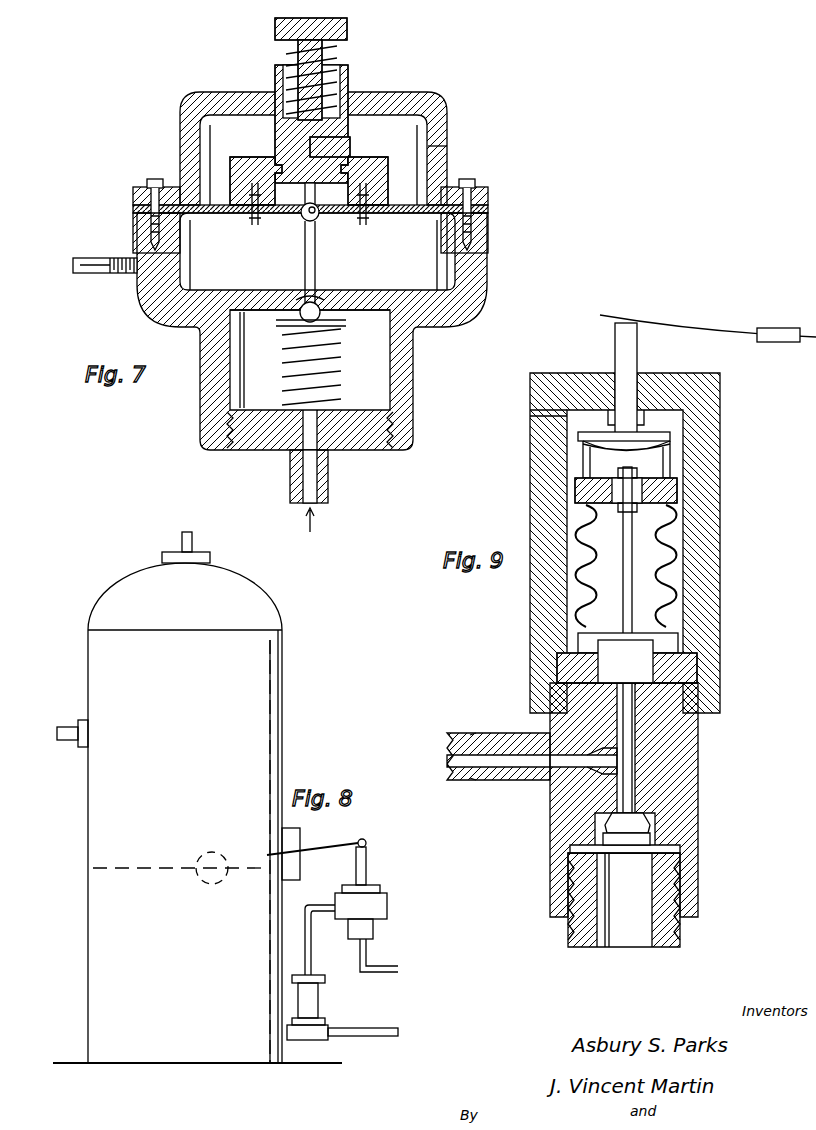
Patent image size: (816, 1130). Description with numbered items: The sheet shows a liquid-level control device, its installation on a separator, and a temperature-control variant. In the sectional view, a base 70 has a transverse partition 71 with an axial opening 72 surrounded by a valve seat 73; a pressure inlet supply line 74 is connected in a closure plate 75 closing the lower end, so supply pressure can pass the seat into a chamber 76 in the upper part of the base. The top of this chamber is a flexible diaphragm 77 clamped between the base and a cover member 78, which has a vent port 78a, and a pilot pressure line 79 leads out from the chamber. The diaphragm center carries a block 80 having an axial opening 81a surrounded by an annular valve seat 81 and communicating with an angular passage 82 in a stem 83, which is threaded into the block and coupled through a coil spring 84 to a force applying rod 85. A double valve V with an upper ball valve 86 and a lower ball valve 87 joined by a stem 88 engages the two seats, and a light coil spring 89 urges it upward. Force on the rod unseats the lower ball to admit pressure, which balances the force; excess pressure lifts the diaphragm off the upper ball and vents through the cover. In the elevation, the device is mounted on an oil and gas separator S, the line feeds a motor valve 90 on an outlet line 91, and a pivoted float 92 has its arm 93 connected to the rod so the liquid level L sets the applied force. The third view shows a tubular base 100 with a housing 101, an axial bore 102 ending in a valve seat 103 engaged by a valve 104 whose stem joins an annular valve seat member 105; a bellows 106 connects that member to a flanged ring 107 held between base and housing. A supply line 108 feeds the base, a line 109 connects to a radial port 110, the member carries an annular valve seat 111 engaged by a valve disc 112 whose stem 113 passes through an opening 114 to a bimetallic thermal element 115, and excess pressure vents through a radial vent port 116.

In FIG. 7, the base 70 is at (476, 283).
In FIG. 7, the transverse partition 71 is at (372, 297).
In FIG. 7, the axial opening 72 is at (305, 298).
In FIG. 7, the valve seat 73 is at (348, 322).
In FIG. 7, the pressure inlet supply line 74 is at (290, 486).
In FIG. 7, the closure plate 75 is at (348, 410).
In FIG. 7, the chamber 76 is at (432, 258).
In FIG. 7, the flexible diaphragm 77 is at (398, 210).
In FIG. 7, the cover member 78 is at (180, 134).
In FIG. 7, the vent port 78a is at (448, 146).
In FIG. 7, the pilot pressure line 79 is at (100, 275).
In FIG. 8, the pilot pressure line 79 is at (318, 915).
In FIG. 7, the block 80 is at (360, 165).
In FIG. 7, the annular valve seat 81 is at (334, 217).
In FIG. 7, the axial opening 81a is at (330, 215).
In FIG. 7, the angular passage 82 is at (350, 140).
In FIG. 7, the stem 83 is at (278, 88).
In FIG. 7, the coil spring 84 is at (288, 58).
In FIG. 7, the force applying rod 85 is at (282, 32).
In FIG. 7, the ball valve 86 is at (322, 220).
In FIG. 7, the ball valve 87 is at (325, 336).
In FIG. 7, the stem 88 is at (305, 238).
In FIG. 7, the light coil spring 89 is at (335, 368).
In FIG. 8, the motor valve 90 is at (320, 1001).
In FIG. 8, the outlet line 91 is at (334, 1028).
In FIG. 8, the pivoted float 92 is at (244, 848).
In FIG. 8, the arm 93 is at (364, 842).
In FIG. 9, the tubular base 100 is at (690, 740).
In FIG. 9, the housing 101 is at (712, 563).
In FIG. 9, the axial bore 102 is at (640, 770).
In FIG. 9, the valve seat 103 is at (648, 818).
In FIG. 9, the valve 104 is at (652, 835).
In FIG. 9, the annular valve seat member 105 is at (672, 465).
In FIG. 9, the bellows 106 is at (678, 530).
In FIG. 9, the flanged ring 107 is at (668, 647).
In FIG. 9, the supply line 108 is at (682, 942).
In FIG. 9, the line 109 is at (495, 782).
In FIG. 9, the radial port 110 is at (598, 772).
In FIG. 9, the annular valve seat 111 is at (672, 447).
In FIG. 9, the valve disc 112 is at (672, 434).
In FIG. 9, the stem 113 is at (637, 360).
In FIG. 9, the opening 114 is at (615, 385).
In FIG. 9, the bimetallic thermal element 115 is at (705, 330).
In FIG. 9, the radial vent port 116 is at (530, 413).
In FIG. 8, the oil and gas separator S is at (284, 728).
In FIG. 8, the liquid level L is at (134, 862).
In FIG. 7, the double valve V is at (280, 250).